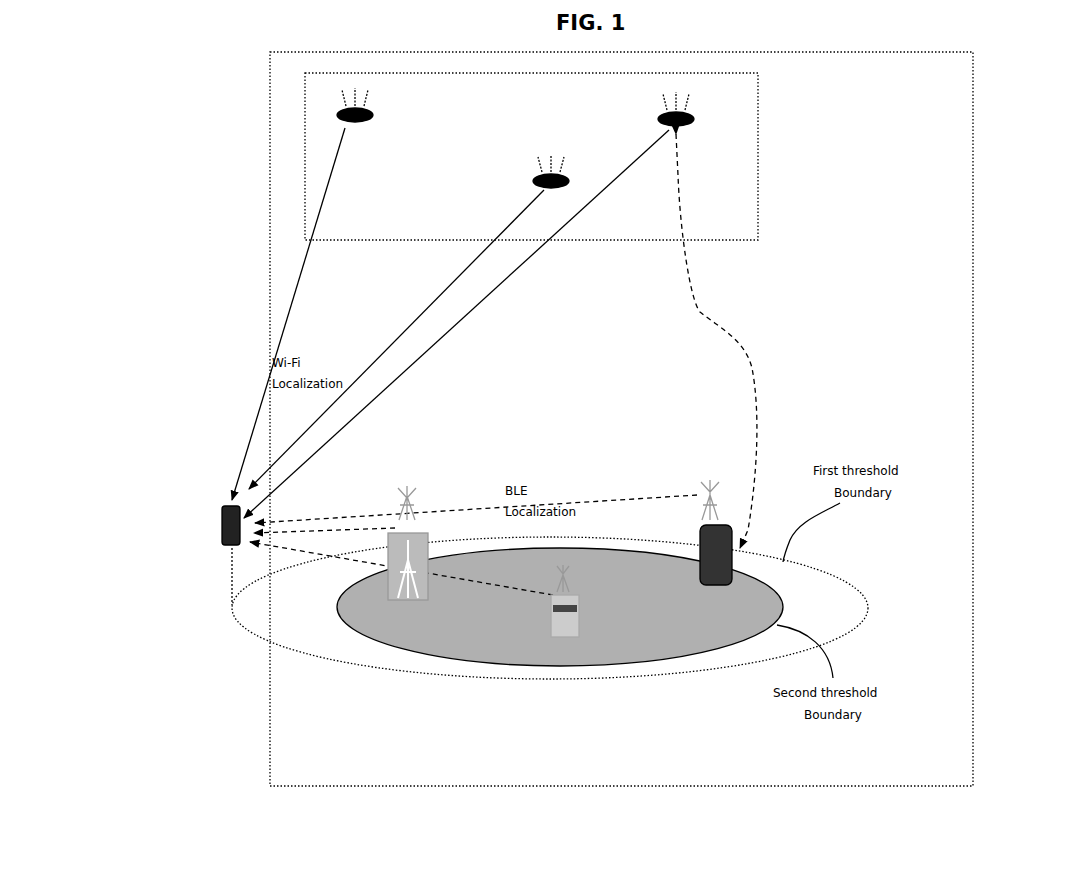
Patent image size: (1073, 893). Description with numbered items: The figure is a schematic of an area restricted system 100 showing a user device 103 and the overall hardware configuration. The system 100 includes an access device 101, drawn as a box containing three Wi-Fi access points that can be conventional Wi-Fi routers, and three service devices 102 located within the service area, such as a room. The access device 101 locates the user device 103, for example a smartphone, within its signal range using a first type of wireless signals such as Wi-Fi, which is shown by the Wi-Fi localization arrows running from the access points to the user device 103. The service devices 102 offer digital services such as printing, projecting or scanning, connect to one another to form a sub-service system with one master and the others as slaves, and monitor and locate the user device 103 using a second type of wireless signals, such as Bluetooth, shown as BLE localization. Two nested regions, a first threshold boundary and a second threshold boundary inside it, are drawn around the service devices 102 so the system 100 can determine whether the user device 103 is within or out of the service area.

The area restricted system 100 is at (976, 190).
The access device 101 is at (760, 186).
The service device 102 is at (407, 603).
The user device 103 is at (220, 526).